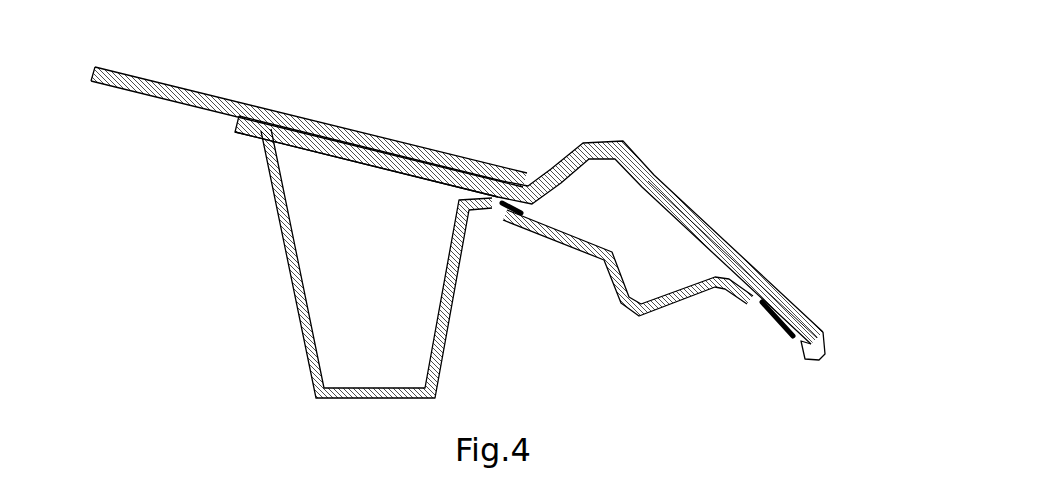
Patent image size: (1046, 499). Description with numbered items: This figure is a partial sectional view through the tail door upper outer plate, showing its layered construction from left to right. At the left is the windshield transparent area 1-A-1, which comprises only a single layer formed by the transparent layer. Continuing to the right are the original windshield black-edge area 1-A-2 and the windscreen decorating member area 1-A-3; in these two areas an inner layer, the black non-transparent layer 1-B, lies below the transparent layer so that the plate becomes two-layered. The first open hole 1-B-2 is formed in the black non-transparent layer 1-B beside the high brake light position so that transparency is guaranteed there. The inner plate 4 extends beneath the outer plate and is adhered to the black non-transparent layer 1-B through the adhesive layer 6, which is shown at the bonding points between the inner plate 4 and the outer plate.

The windshield transparent area 1-A-1 is at (145, 81).
The original windshield black-edge area 1-A-2 is at (348, 133).
The windscreen decorating member area 1-A-3 is at (650, 173).
The first open hole 1-B-2 is at (213, 115).
The black non-transparent layer 1-B is at (397, 173).
The inner plate 4 is at (293, 277).
The adhesive layer 6 is at (775, 322).